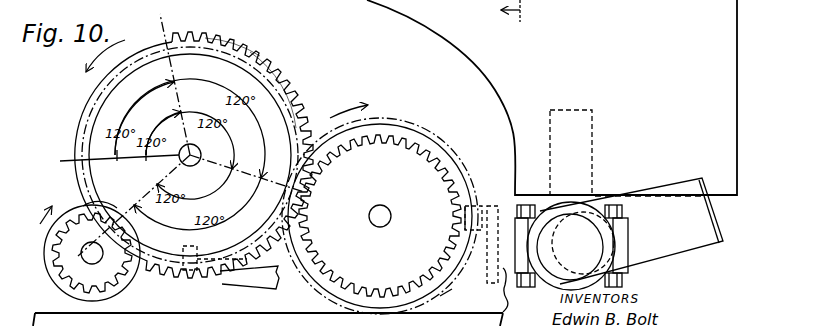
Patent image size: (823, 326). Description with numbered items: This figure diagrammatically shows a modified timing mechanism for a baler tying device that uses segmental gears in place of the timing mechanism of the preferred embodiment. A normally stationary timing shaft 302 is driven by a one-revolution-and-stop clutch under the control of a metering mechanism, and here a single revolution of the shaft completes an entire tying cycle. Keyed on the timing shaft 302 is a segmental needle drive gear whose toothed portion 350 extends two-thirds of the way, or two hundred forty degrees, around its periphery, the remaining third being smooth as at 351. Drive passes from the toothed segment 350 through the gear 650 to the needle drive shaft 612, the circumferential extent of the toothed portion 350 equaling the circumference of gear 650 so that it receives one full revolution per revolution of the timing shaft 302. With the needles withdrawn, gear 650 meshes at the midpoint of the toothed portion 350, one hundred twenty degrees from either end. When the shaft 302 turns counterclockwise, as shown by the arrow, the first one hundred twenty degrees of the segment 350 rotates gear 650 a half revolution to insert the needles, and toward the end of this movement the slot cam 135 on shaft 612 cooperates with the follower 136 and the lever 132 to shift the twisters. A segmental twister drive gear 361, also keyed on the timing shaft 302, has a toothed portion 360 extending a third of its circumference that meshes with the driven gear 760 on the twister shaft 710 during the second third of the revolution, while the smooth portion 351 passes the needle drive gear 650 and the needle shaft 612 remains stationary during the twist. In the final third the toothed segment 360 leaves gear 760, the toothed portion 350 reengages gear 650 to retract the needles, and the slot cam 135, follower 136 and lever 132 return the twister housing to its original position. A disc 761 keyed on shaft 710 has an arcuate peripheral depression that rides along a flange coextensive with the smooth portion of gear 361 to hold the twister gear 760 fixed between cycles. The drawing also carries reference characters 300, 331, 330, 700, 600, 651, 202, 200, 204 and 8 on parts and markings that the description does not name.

The main gear 300 is at (195, 141).
The toothed portion of segmental needle drive gear 350 is at (274, 66).
The smooth portion of needle drive gear 351 is at (90, 99).
The segmental twister drive gear 361 is at (92, 130).
The toothed portion of twister drive gear 360 is at (233, 57).
The timing shaft 302 is at (100, 162).
The latch 331 is at (200, 246).
The arm 330 is at (250, 282).
The pinion gear 700 is at (67, 253).
The twister shaft 710 is at (81, 258).
The twister drive gear 760 is at (110, 287).
The disc 761 is at (110, 206).
The drive gear 600 is at (420, 130).
The needle drive shaft 612 is at (389, 217).
The needle drive gear 650 is at (383, 137).
The ring gap 651 is at (459, 297).
The slot cam 135 is at (458, 156).
The cam follower 136 is at (512, 176).
The tube 202 is at (595, 128).
The clamp 200 is at (606, 200).
The clamp bar 204 is at (631, 231).
The lever 132 is at (556, 156).
The section indicator 8 is at (517, 15).